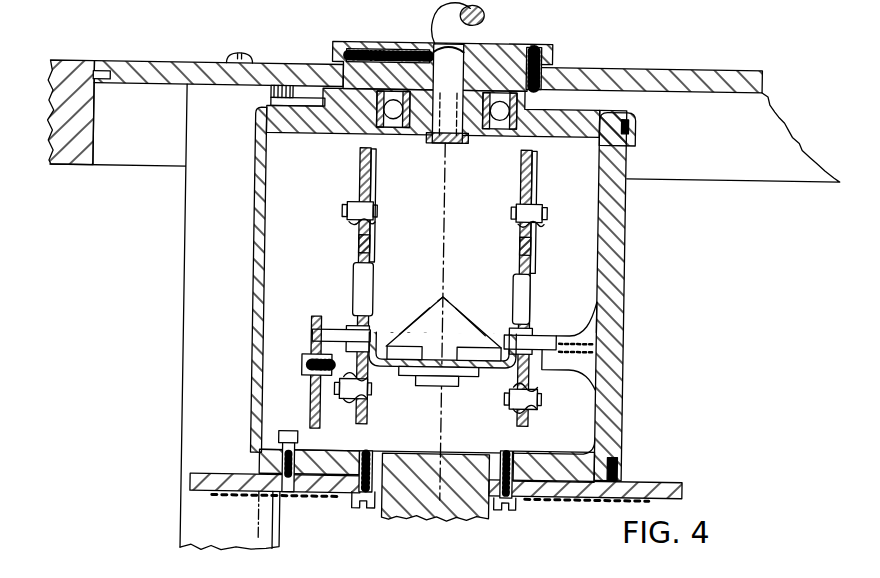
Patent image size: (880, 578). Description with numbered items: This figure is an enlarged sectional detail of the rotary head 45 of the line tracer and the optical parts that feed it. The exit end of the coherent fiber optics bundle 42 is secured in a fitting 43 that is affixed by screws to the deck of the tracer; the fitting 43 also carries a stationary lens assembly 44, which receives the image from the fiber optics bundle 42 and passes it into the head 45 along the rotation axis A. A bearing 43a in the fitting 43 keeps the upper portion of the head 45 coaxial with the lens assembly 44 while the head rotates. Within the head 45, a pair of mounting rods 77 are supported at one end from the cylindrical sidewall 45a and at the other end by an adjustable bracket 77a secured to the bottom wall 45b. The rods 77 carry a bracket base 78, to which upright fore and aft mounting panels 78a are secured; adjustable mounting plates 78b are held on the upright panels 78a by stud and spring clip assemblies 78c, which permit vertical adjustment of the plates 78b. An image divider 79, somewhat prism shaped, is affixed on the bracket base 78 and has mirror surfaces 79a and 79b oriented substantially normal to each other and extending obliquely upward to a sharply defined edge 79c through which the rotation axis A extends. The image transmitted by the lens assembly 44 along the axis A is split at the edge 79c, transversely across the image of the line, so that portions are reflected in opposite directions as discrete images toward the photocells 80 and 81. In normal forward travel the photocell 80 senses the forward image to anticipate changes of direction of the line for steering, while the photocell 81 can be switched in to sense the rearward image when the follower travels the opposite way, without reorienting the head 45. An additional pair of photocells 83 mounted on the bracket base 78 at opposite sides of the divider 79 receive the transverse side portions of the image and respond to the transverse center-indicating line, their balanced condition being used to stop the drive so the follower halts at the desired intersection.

The coherent fiber optics bundle 42 is at (464, 44).
The fitting 43 is at (549, 50).
The bearing 43a is at (510, 127).
The stationary lens assembly 44 is at (452, 144).
The rotary head 45 is at (626, 224).
The cylindrical sidewall 45a is at (621, 311).
The bottom wall 45b is at (342, 460).
The mounting rods 77 is at (545, 338).
The adjustable bracket 77a is at (312, 340).
The bracket base 78 is at (496, 385).
The upright fore and aft mounting panels 78a is at (364, 246).
The adjustable mounting plates 78b is at (359, 244).
The stud and spring clip assemblies 78c is at (544, 208).
The image divider 79 is at (448, 305).
The mirror surface 79a is at (458, 308).
The mirror surface 79b is at (425, 308).
The sharply defined edge 79c is at (443, 298).
The photocell 80 is at (355, 292).
The photocell 81 is at (530, 299).
The photocells 83 is at (453, 385).
The rotation axis A is at (441, 168).